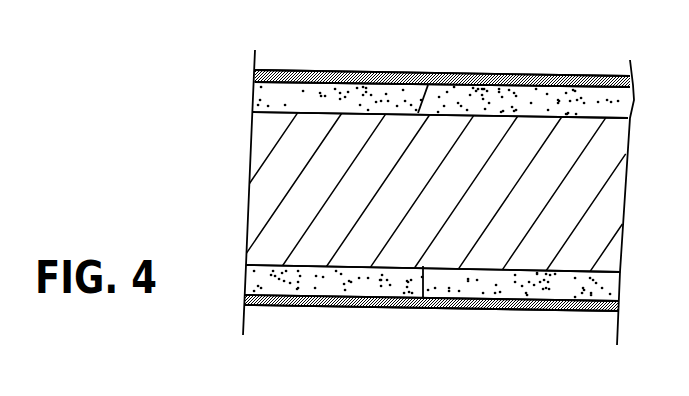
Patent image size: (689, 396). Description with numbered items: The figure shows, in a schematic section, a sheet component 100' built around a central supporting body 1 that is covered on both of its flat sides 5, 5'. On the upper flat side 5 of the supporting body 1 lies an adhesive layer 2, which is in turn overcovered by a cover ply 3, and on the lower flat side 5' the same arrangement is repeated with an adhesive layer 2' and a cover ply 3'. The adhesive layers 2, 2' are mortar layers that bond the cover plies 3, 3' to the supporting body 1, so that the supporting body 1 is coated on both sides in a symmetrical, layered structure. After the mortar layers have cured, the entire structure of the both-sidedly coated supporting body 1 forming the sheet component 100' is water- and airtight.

The sheet component 100' is at (366, 191).
The supporting body 1 is at (362, 230).
The adhesive layer 2 is at (441, 69).
The adhesive layer 2' is at (433, 321).
The cover ply 3 is at (442, 53).
The cover ply 3' is at (431, 336).
The flat side 5 is at (430, 66).
The flat side 5' is at (416, 322).